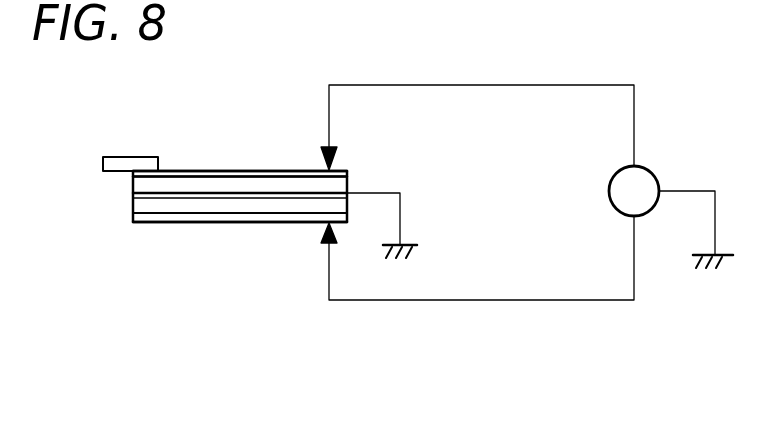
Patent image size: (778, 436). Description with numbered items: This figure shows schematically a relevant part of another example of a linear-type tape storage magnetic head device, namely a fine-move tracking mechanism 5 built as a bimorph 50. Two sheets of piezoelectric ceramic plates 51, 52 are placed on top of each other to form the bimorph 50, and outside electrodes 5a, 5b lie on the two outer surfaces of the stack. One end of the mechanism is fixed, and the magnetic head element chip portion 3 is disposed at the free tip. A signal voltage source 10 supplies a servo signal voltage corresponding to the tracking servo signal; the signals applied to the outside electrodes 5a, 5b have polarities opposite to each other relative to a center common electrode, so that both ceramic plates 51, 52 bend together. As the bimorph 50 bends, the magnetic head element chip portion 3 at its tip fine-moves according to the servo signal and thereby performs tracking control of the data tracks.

The magnetic head element chip portion 3 is at (133, 157).
The fine-move tracking mechanism 5 is at (218, 222).
The electrode layer 5a is at (273, 171).
The electrode layer 5b is at (260, 222).
The signal voltage source 10 is at (655, 168).
The bimorph 50 is at (198, 313).
The piezoelectric ceramic plate 51 is at (152, 188).
The piezoelectric ceramic plate 52 is at (177, 202).